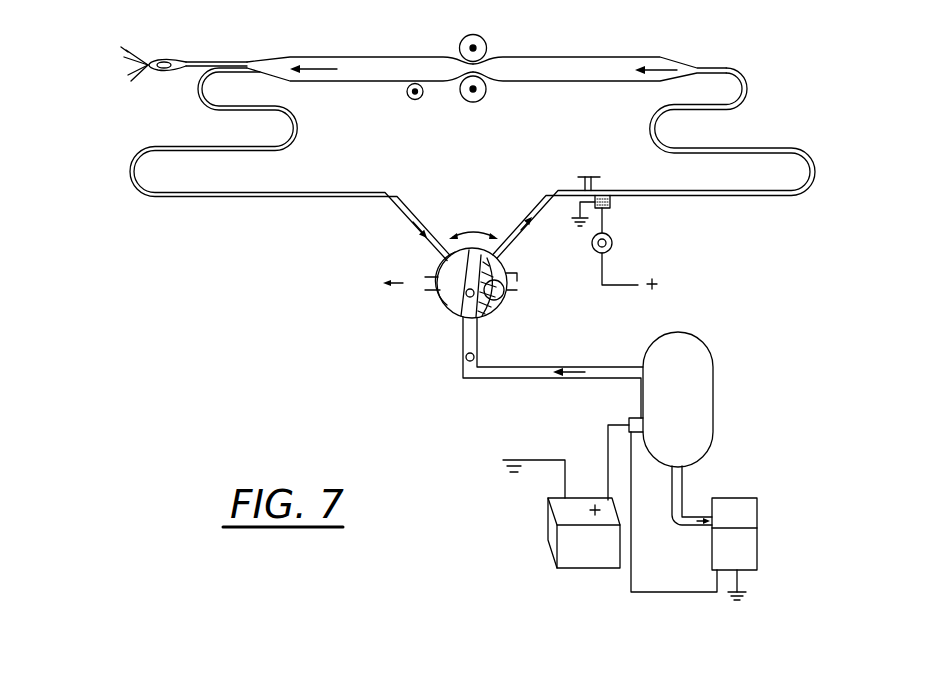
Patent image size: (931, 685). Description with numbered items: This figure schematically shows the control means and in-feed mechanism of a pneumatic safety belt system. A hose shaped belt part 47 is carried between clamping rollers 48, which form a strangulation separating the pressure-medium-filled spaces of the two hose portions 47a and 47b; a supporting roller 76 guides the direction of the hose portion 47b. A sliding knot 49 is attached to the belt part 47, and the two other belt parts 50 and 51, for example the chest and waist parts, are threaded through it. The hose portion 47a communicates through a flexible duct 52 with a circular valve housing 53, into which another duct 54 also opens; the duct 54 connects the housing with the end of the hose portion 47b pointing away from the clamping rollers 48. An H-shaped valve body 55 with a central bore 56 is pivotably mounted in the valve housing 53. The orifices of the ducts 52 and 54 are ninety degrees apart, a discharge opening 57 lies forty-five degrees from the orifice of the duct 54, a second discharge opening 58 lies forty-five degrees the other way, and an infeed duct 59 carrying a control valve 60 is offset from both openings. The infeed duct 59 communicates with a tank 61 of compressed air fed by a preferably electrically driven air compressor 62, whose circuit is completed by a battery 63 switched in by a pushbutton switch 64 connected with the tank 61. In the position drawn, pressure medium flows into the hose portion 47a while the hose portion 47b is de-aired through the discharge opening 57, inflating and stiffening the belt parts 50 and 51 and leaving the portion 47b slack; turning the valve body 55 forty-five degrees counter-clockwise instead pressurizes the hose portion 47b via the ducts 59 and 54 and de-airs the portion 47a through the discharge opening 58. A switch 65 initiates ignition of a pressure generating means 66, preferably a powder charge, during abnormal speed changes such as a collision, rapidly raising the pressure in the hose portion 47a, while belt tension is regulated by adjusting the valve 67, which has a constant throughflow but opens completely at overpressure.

The hose shaped belt part 47 is at (486, 67).
The hose portion 47a is at (571, 67).
The hose portion 47b is at (329, 57).
The clamping rollers 48 is at (481, 37).
The sliding knot 49 is at (172, 60).
The belt part 50 is at (131, 48).
The belt part 51 is at (134, 80).
The flexible duct 52 is at (746, 150).
The valve housing 53 is at (474, 274).
The duct 54 is at (272, 198).
The valve body 55 is at (503, 298).
The central bore 56 is at (484, 312).
The discharge opening 57 is at (425, 277).
The second discharge opening 58 is at (516, 282).
The infeed duct 59 is at (462, 338).
The control valve 60 is at (466, 359).
The tank 61 is at (693, 375).
The air compressor 62 is at (742, 550).
The battery 63 is at (570, 545).
The pushbutton switch 64 is at (631, 418).
The switch 65 is at (613, 243).
The pressure generating means 66 is at (611, 203).
The valve 67 is at (587, 177).
The supporting roller 76 is at (407, 97).